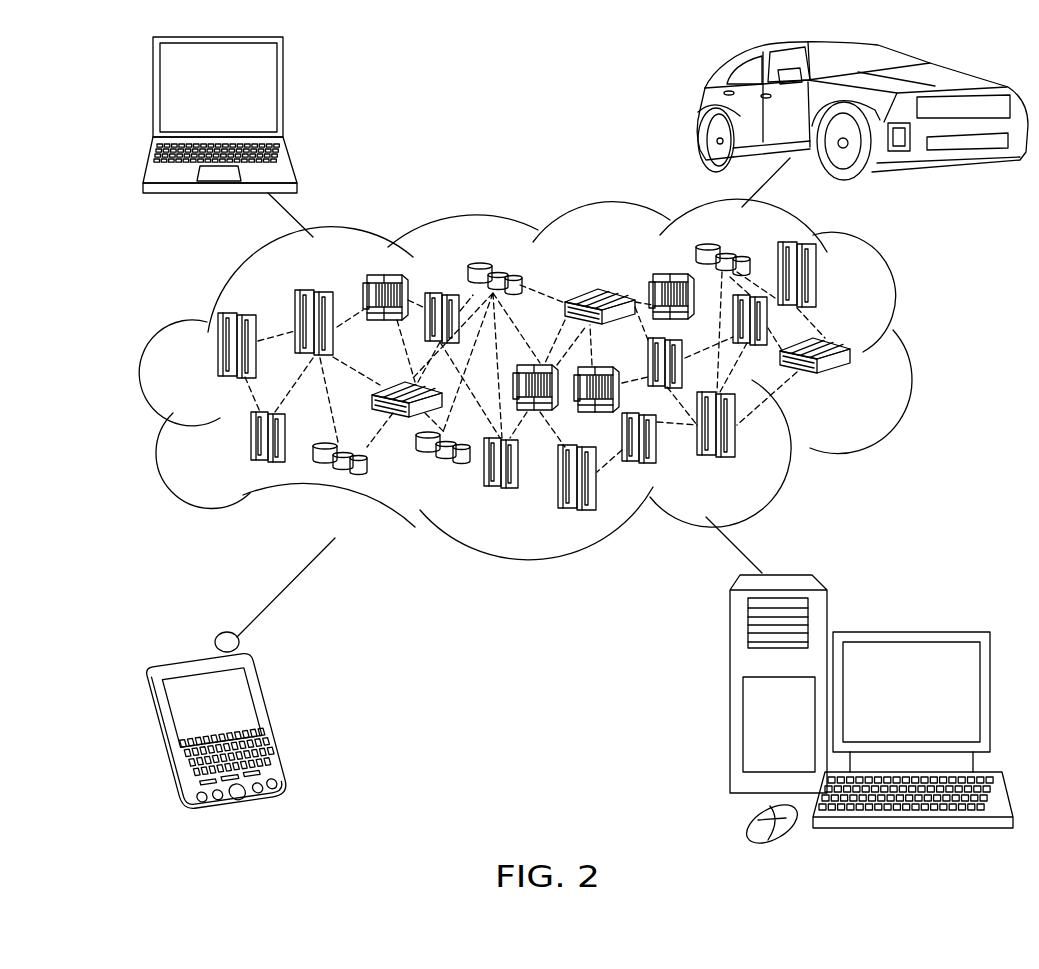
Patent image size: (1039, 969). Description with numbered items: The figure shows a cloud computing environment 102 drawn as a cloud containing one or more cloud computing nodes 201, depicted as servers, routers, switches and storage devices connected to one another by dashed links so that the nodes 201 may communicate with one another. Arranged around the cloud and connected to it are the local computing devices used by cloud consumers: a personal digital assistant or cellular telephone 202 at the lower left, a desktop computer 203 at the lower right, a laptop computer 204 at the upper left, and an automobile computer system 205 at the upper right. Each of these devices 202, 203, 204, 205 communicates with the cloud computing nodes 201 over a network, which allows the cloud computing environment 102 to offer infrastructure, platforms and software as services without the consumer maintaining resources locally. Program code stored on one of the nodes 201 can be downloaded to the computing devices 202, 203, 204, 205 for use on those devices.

The cloud computing environment 102 is at (908, 354).
The cloud computing nodes 201 is at (857, 385).
The personal digital assistant or cellular telephone 202 is at (277, 716).
The desktop computer 203 is at (910, 632).
The laptop computer 204 is at (283, 94).
The automobile computer system 205 is at (700, 107).